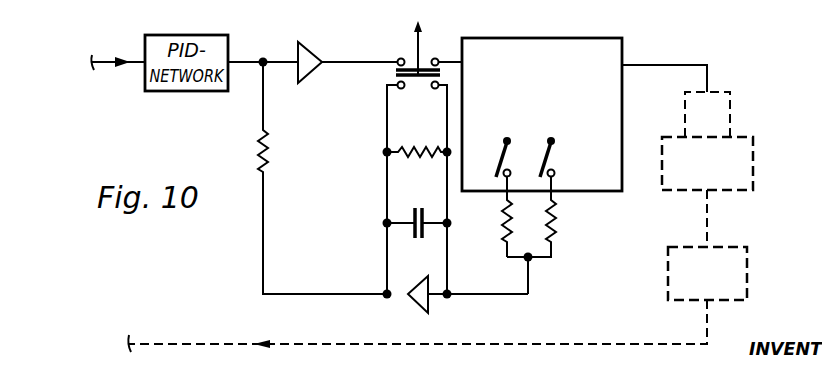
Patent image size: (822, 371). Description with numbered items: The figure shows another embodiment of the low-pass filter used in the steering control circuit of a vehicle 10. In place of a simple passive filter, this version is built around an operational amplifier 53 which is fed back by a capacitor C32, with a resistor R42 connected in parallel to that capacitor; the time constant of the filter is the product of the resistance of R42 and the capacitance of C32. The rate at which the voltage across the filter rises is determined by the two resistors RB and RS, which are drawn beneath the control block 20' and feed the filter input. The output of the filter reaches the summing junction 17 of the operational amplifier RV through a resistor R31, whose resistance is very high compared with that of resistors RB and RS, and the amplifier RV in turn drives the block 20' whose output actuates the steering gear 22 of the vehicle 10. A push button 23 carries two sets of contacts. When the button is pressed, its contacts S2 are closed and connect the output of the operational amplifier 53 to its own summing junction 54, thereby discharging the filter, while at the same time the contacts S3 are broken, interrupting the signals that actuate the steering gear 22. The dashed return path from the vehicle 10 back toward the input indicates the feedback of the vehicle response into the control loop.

The summing junction 17 is at (265, 50).
The push button 23 is at (419, 52).
The control unit 20' is at (542, 97).
The steering gear 22 is at (733, 138).
The vehicle 10 is at (740, 257).
The operational amplifier 53 is at (416, 300).
The summing junction 54 is at (447, 299).
The operational amplifier RV is at (319, 59).
The contacts S2 is at (418, 97).
The contacts S3 is at (425, 57).
The resistor R31 is at (322, 178).
The resistor R42 is at (417, 165).
The capacitor C32 is at (417, 236).
The resistor RB is at (491, 217).
The resistor RS is at (563, 217).